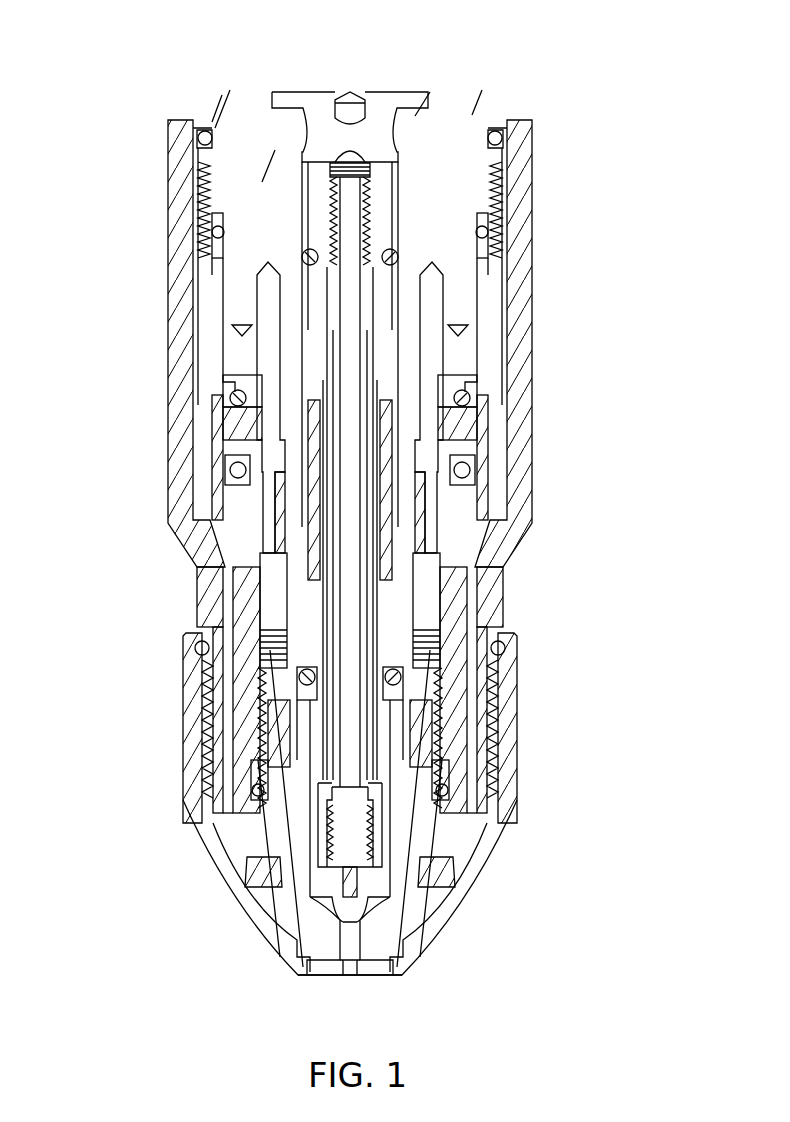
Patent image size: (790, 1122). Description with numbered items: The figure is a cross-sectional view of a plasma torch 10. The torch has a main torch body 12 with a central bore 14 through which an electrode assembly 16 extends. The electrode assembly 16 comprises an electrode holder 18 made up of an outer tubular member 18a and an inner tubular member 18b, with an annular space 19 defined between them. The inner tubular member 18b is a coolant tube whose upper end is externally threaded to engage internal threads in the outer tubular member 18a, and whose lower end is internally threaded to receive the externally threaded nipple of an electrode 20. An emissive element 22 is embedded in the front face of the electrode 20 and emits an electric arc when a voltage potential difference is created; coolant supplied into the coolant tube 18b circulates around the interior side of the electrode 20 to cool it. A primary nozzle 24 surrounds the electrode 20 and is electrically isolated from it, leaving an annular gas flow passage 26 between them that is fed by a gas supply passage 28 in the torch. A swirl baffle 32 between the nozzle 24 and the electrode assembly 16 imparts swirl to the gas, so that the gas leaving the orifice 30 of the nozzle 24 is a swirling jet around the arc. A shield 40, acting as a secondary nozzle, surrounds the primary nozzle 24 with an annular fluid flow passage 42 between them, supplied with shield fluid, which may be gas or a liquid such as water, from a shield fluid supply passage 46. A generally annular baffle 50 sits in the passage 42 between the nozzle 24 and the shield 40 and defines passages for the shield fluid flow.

The plasma torch 10 is at (556, 122).
The main torch body 12 is at (250, 197).
The central bore 14 is at (305, 332).
The electrode assembly 16 is at (298, 294).
The electrode holder 18 is at (385, 190).
The outer tubular member 18a is at (385, 512).
The inner tubular member 18b is at (365, 575).
The annular space 19 is at (370, 625).
The electrode 20 is at (370, 887).
The emissive element 22 is at (340, 884).
The primary nozzle 24 is at (425, 838).
The annular gas flow passage 26 is at (300, 808).
The gas supply passage 28 is at (275, 598).
The orifice 30 is at (345, 968).
The swirl baffle 32 is at (285, 718).
The shield 40 is at (495, 805).
The annular fluid flow passage 42 is at (462, 848).
The shield fluid supply passage 46 is at (495, 345).
The baffle 50 is at (262, 878).